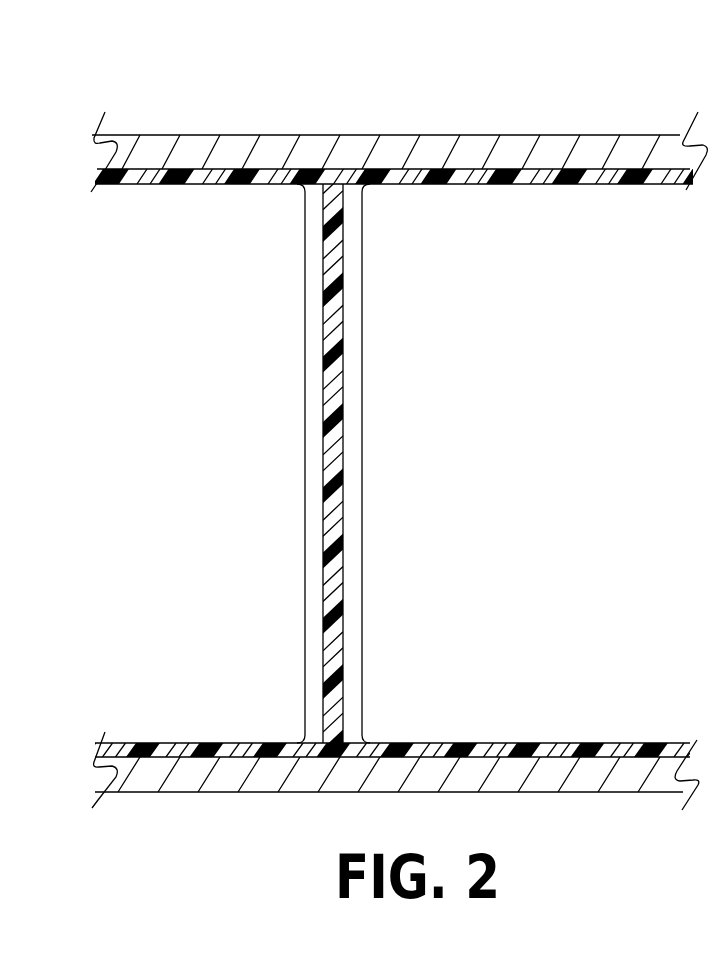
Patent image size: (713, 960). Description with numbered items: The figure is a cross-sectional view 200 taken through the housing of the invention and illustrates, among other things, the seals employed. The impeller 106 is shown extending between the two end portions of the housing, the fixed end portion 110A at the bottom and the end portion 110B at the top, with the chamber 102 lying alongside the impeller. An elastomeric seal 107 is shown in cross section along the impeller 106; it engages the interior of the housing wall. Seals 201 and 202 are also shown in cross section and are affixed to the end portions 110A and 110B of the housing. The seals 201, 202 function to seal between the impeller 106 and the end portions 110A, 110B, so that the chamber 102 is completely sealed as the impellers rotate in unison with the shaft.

The view 200 is at (264, 94).
The chamber 102 is at (488, 272).
The impeller 106 is at (353, 405).
The elastomeric seal 107 is at (338, 545).
The fixed end portion 110A is at (630, 772).
The end portion 110B is at (393, 150).
The seal 201 is at (553, 765).
The seal 202 is at (584, 172).